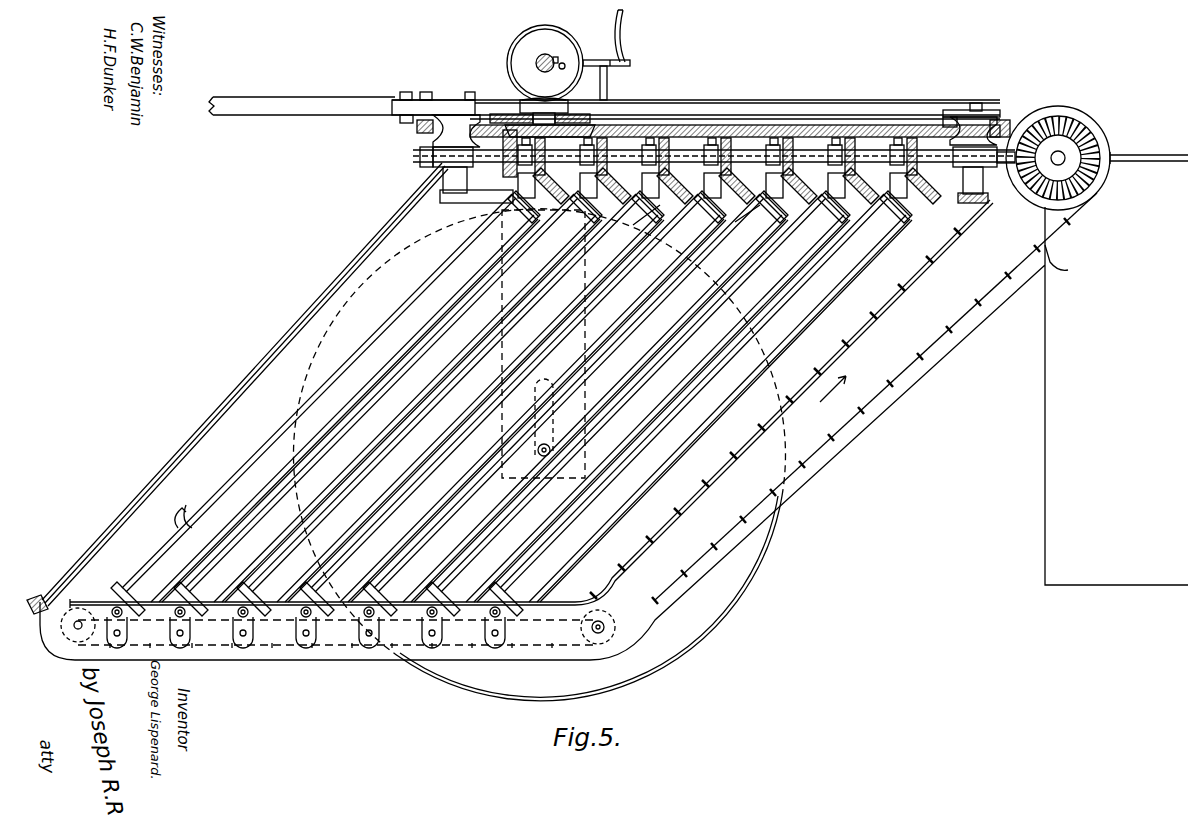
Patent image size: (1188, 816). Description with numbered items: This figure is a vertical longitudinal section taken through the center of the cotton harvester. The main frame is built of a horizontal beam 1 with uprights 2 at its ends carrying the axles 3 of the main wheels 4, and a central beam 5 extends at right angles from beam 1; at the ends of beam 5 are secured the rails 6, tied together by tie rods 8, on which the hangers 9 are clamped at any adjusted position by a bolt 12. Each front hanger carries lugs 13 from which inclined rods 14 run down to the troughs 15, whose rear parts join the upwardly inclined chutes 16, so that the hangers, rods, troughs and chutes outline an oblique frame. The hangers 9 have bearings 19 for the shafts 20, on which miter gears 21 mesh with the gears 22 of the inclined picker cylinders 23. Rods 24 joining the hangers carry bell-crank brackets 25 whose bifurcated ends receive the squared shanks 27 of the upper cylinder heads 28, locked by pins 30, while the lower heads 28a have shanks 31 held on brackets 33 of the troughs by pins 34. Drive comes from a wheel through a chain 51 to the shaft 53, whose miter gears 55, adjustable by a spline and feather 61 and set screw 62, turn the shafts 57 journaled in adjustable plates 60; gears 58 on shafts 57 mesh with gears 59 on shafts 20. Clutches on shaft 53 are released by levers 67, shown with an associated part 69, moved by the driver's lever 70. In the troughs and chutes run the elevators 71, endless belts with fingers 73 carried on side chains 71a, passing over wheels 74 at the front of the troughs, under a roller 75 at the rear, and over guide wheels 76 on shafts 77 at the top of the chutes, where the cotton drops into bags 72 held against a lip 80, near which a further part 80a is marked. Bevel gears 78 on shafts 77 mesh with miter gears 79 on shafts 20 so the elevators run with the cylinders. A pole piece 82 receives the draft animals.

The horizontal beam 1 is at (585, 110).
The uprights 2 is at (533, 478).
The axles 3 is at (548, 417).
The main wheels 4 is at (740, 608).
The beam 5 is at (737, 93).
The beams or rails 6 is at (478, 112).
The tie bars or rods 8 is at (893, 128).
The hangers or supports 9 is at (715, 129).
The bolt or screw 12 is at (458, 100).
The lugs or projections 13 is at (455, 180).
The rods 14 is at (145, 480).
The troughs or plates 15 is at (338, 634).
The chutes 16 is at (874, 398).
The bearings 19 is at (438, 160).
The shafts 20 is at (418, 155).
The miter gears 21 is at (553, 171).
The gears 22 is at (739, 185).
The picker cylinders 23 is at (517, 398).
The rods 24 is at (714, 185).
The arms, brackets or supports 25 is at (648, 176).
The squared shanks 27 is at (787, 219).
The cylinder heads 28 is at (710, 210).
The heads 28a is at (382, 596).
The pins 30 is at (706, 215).
The extensions or shanks 31 is at (318, 611).
The brackets 33 is at (318, 633).
The pins 34 is at (133, 599).
The chain 51 is at (570, 112).
The shaft 53 is at (563, 52).
The miter gears 55 is at (545, 63).
The shafts 57 is at (544, 118).
The miter gears 58 is at (550, 135).
The gears 59 is at (497, 153).
The plates 60 is at (535, 102).
The spline and feather 61 is at (548, 53).
The set screw 62 is at (567, 73).
The levers 67 is at (628, 62).
The pivot 69 is at (612, 58).
The lever 70 is at (630, 36).
The elevators 71 is at (531, 404).
The endless chains 71a is at (425, 598).
The bags or receptacles 72 is at (607, 433).
The projections or fingers 73 is at (655, 536).
The rollers or wheels 74 is at (80, 600).
The roller 75 is at (609, 618).
The guide wheels or rollers 76 is at (1057, 166).
The shafts 77 is at (1058, 158).
The bevel gear wheels 78 is at (1060, 116).
The miter gears 79 is at (1058, 158).
The lip 80 is at (1170, 164).
The rod end 80a is at (1068, 261).
The pole piece 82 is at (302, 95).